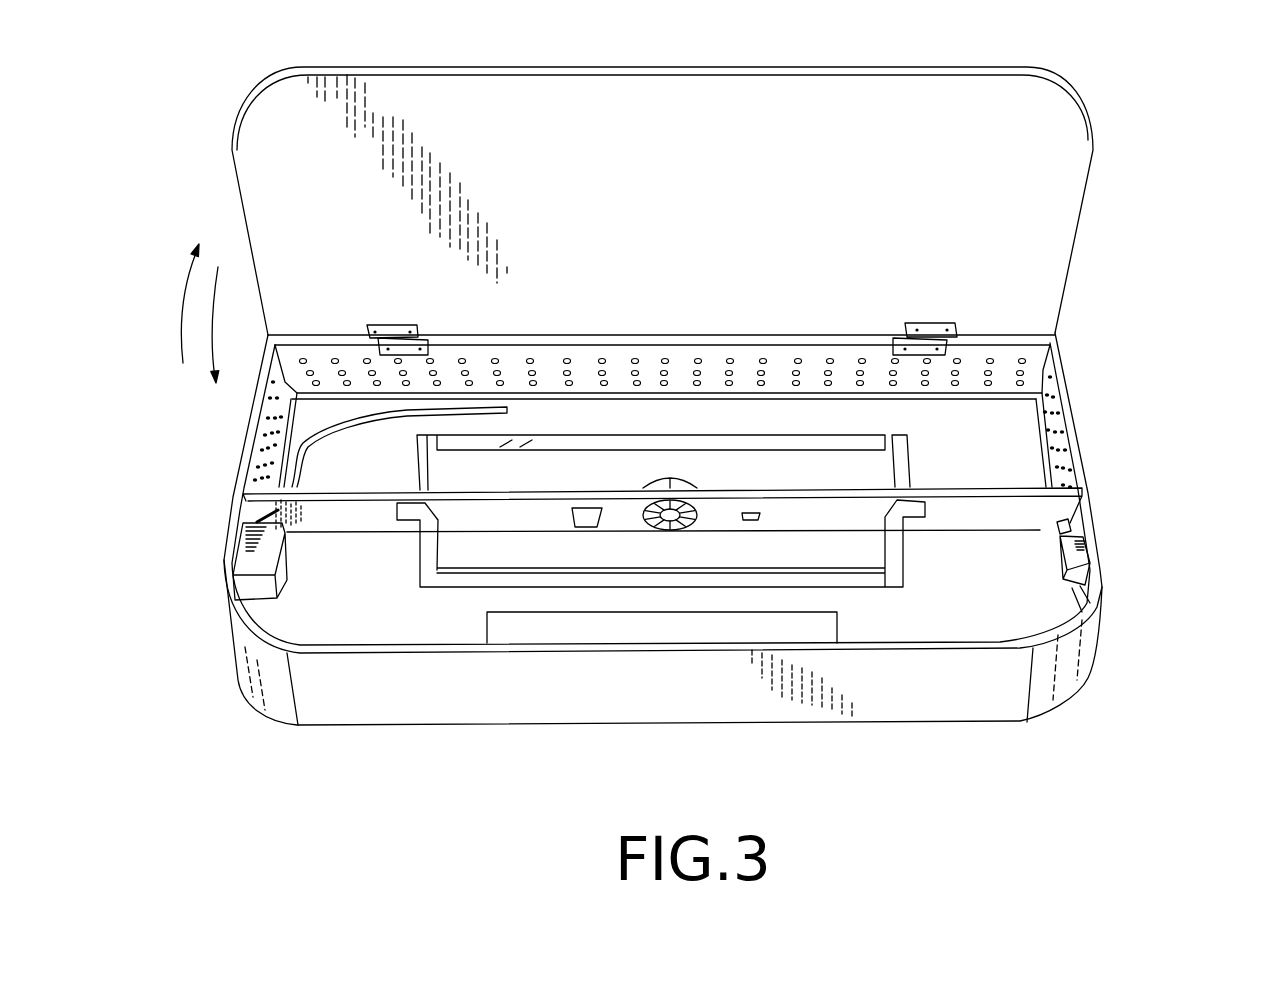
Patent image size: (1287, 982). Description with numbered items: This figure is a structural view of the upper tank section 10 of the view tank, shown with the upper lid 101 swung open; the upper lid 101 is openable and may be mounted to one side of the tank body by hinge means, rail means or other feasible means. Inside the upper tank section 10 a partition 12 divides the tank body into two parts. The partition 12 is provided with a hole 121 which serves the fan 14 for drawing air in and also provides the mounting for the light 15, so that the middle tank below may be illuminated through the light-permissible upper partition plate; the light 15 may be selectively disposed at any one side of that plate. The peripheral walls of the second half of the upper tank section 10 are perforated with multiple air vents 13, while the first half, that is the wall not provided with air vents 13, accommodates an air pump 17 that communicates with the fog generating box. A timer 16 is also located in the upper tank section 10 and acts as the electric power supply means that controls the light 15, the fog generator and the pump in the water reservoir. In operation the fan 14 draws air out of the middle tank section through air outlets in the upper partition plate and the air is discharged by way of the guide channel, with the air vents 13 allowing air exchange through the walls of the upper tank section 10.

The upper tank section 10 is at (1118, 322).
The upper lid 101 is at (1073, 163).
The partition 12 is at (365, 520).
The hole 121 is at (647, 512).
The air vents 13 is at (698, 358).
The fan 14 is at (703, 517).
The light 15 is at (867, 438).
The timer 16 is at (1065, 560).
The air pump 17 is at (243, 562).